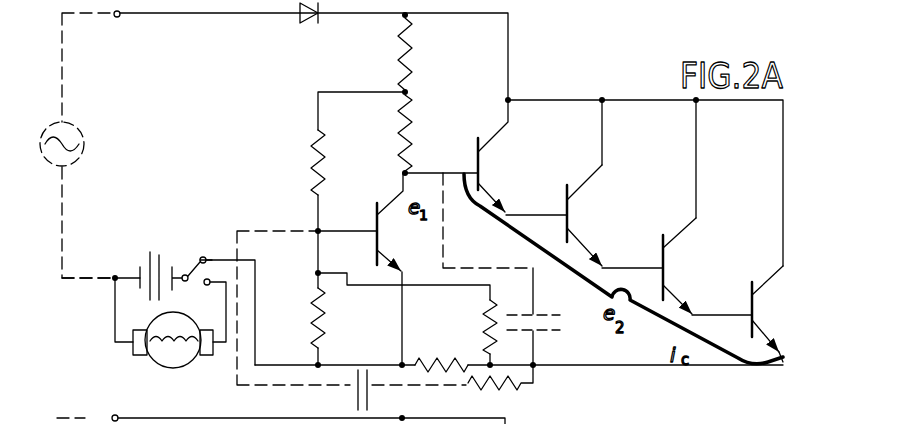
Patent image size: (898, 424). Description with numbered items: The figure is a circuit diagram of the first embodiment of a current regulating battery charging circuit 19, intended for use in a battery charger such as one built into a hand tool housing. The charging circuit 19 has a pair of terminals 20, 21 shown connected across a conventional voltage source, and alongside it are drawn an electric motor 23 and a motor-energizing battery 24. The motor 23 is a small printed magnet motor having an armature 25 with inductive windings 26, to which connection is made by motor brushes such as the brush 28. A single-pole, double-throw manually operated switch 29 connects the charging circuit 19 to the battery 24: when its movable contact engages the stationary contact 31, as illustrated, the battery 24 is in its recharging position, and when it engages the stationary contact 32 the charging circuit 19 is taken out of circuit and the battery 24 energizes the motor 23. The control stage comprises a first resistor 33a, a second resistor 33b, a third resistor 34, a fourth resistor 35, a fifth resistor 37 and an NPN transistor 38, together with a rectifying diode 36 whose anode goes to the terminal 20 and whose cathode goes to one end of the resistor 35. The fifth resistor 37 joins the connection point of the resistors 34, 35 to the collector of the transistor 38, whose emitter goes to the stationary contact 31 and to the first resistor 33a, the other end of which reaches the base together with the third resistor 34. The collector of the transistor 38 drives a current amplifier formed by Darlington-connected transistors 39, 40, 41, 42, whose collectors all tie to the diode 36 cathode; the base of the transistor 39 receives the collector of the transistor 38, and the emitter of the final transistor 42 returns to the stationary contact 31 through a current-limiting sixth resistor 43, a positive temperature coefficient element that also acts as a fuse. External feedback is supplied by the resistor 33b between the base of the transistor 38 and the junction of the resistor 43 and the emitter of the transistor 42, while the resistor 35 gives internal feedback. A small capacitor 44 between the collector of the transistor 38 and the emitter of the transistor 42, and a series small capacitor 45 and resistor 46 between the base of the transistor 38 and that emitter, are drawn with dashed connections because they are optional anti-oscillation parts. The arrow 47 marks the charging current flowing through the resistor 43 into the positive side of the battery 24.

The battery charging circuit 19 is at (528, 80).
The terminal 20 is at (119, 17).
The terminal 21 is at (114, 276).
The electric motor 23 is at (108, 363).
The motor-energizing battery 24 is at (157, 255).
The armature 25 is at (175, 368).
The inductive windings 26 is at (175, 340).
The motor brush 28 is at (205, 358).
The manually operated switch 29 is at (181, 256).
The stationary contact 31 is at (205, 258).
The stationary contact 32 is at (207, 286).
The first resistor 33a is at (333, 328).
The second resistor 33b is at (496, 312).
The third resistor 34 is at (325, 160).
The fourth resistor 35 is at (415, 50).
The rectifying diode 36 is at (300, 17).
The fifth resistor 37 is at (412, 127).
The NPN transistor 38 is at (386, 221).
The transistor 39 is at (488, 171).
The transistor 40 is at (585, 211).
The transistor 41 is at (680, 264).
The transistor 42 is at (762, 310).
The current-limiting sixth resistor 43 is at (487, 344).
The small capacitor 44 is at (540, 312).
The small capacitor 45 is at (372, 390).
The resistor 46 is at (510, 389).
The arrow 47 is at (578, 353).